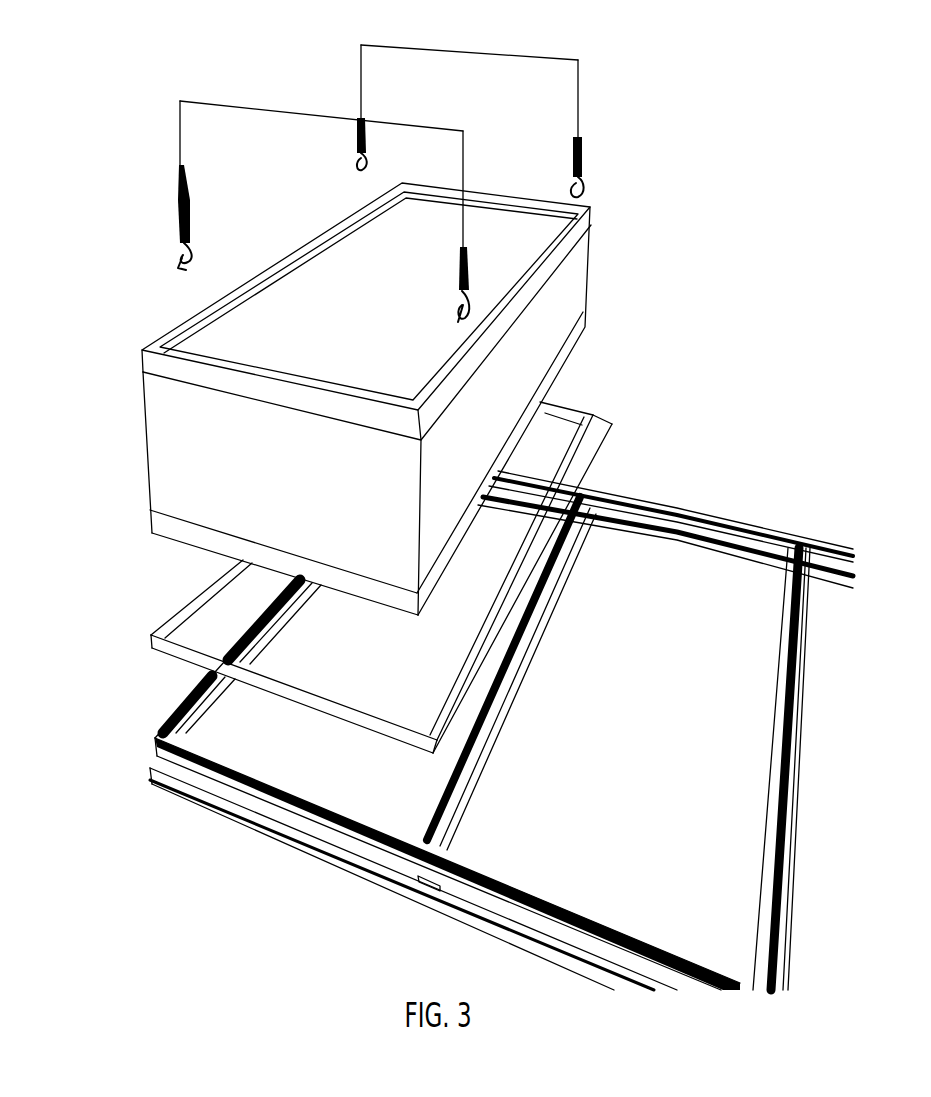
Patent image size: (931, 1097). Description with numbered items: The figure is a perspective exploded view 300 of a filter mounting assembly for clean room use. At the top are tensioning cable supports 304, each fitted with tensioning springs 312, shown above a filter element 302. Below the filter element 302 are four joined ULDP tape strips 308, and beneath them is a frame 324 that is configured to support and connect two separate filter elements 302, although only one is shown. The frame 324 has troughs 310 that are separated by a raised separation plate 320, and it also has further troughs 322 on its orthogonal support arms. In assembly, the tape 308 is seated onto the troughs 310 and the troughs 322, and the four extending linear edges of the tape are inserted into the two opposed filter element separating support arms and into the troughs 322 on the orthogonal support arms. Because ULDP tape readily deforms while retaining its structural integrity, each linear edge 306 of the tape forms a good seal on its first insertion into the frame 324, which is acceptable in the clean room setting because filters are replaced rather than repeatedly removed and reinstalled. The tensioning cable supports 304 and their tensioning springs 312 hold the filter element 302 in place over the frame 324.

The perspective exploded view 300 is at (713, 315).
The filter element 302 is at (166, 451).
The tensioning cable supports 304 is at (177, 150).
The linear edge 306 is at (170, 541).
The ULDP tape strips 308 is at (188, 652).
The troughs 310 is at (588, 498).
The tensioning springs 312 is at (177, 220).
The raised separation plate 320 is at (780, 622).
The troughs 322 is at (737, 537).
The frame 324 is at (677, 504).